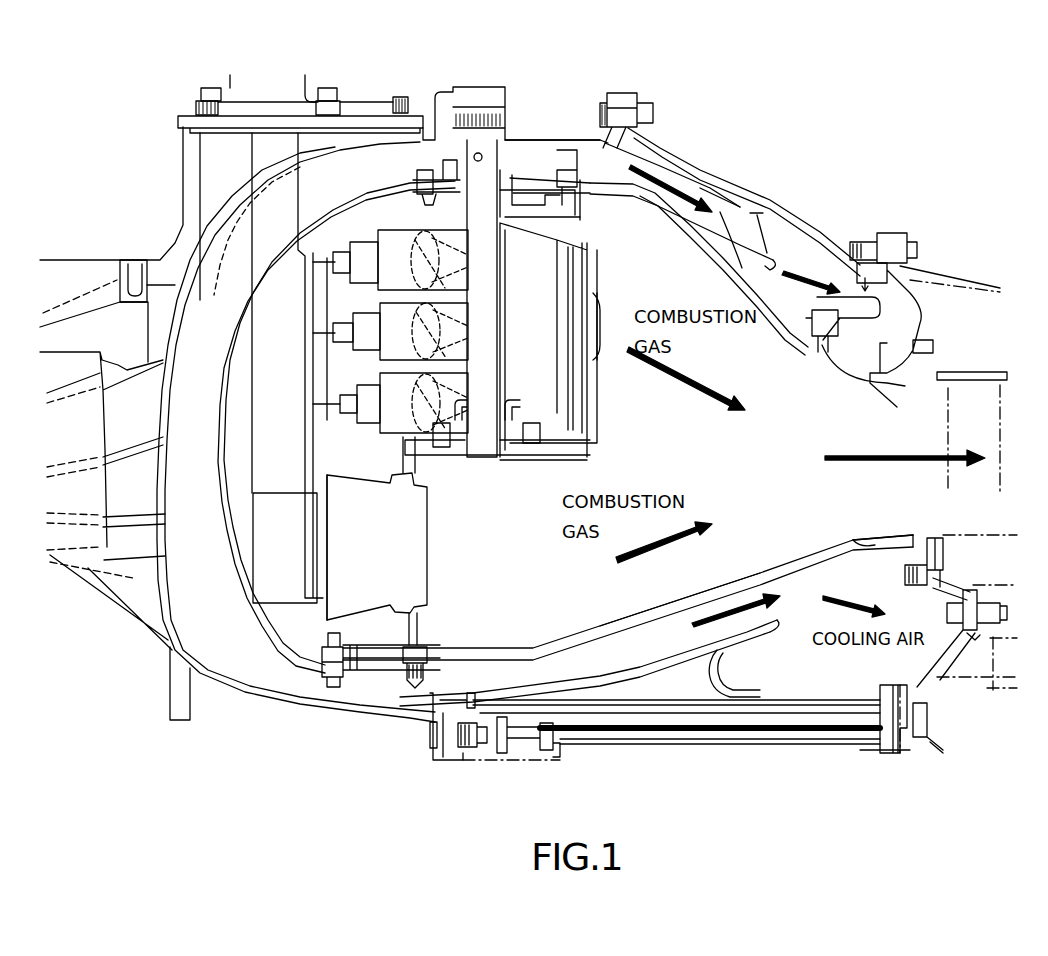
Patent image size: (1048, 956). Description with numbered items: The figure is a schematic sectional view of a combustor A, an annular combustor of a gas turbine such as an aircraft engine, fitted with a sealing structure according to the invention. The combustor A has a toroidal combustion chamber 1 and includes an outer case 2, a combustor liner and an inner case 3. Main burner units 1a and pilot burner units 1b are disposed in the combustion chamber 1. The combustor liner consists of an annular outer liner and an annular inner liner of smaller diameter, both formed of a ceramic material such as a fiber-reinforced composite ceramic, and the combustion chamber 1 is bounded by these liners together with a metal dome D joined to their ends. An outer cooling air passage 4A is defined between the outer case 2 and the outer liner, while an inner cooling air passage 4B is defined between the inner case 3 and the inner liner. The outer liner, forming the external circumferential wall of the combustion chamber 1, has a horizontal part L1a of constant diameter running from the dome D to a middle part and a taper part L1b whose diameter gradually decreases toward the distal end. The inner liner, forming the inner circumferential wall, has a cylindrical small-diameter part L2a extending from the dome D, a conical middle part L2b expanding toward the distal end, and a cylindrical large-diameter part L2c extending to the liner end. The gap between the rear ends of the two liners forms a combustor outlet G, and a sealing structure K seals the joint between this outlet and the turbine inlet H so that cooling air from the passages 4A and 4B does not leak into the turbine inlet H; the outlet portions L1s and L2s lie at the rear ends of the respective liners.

The combustor A is at (930, 60).
The combustion chamber 1 is at (690, 432).
The main burner units 1a is at (603, 300).
The pilot burner units 1b is at (430, 506).
The outer case 2 is at (718, 176).
The inner case 3 is at (498, 753).
The outer cooling air passage 4A is at (667, 164).
The inner cooling air passage 4B is at (583, 665).
The dome D is at (233, 533).
The combustor outlet G is at (933, 417).
The turbine inlet H is at (975, 398).
The sealing structure K is at (903, 236).
The horizontal part L1a is at (603, 180).
The taper part L1b is at (738, 207).
The first cooling air passage outlet L1s is at (790, 318).
The cylindrical small-diameter part L2a is at (460, 648).
The conical middle part L2b is at (718, 590).
The cylindrical large-diameter part L2c is at (900, 537).
The second cooling air passage outlet L2s is at (850, 538).